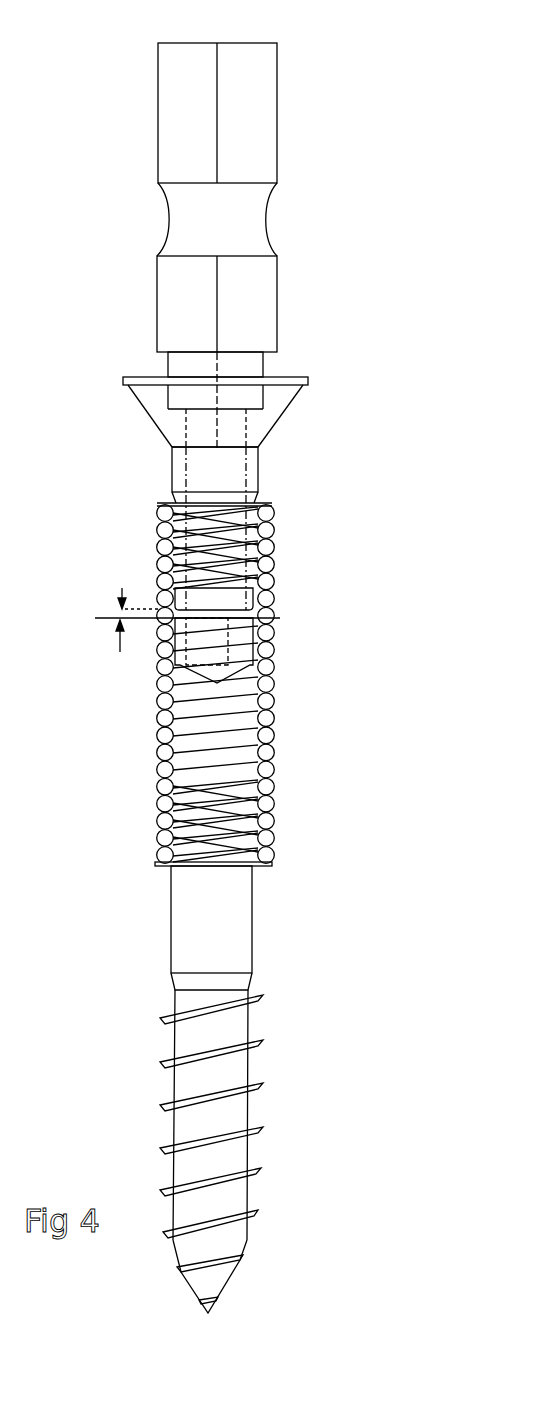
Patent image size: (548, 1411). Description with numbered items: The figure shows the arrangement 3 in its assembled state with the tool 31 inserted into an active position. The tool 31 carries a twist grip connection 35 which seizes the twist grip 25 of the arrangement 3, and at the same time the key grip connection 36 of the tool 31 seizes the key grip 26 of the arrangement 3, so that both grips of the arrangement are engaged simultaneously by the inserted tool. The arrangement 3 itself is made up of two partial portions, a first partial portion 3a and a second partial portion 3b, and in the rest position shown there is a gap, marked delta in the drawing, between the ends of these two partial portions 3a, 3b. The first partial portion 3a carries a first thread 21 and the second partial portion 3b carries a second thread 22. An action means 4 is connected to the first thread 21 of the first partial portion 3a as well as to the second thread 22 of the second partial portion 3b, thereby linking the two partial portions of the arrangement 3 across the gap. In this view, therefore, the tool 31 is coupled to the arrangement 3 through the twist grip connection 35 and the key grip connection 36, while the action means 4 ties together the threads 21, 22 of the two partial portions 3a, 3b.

The tool 31 is at (142, 139).
The twist grip connection 35 is at (180, 366).
The arrangement 3 is at (190, 845).
The twist grip 25 is at (258, 408).
The second partial portion 3b is at (252, 466).
The second thread 22 is at (264, 540).
The action means 4 is at (266, 620).
The key grip 26 is at (262, 658).
The key grip connection 36 is at (197, 642).
The first thread 21 is at (260, 803).
The first partial portion 3a is at (222, 951).